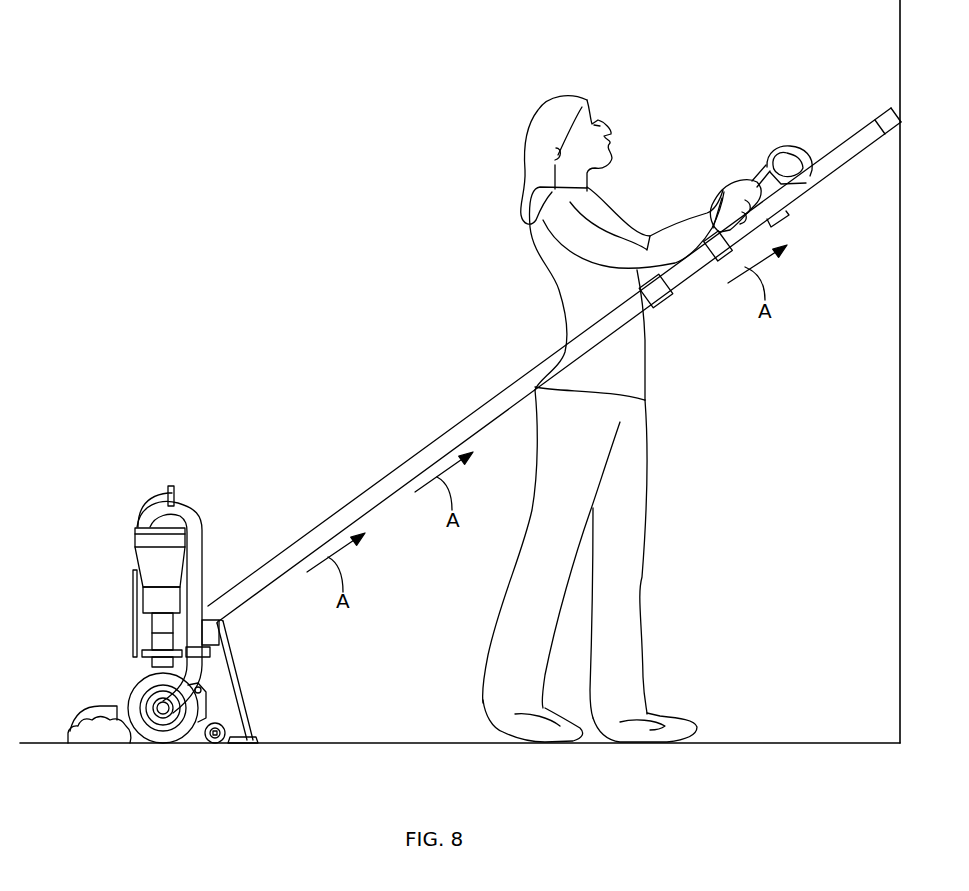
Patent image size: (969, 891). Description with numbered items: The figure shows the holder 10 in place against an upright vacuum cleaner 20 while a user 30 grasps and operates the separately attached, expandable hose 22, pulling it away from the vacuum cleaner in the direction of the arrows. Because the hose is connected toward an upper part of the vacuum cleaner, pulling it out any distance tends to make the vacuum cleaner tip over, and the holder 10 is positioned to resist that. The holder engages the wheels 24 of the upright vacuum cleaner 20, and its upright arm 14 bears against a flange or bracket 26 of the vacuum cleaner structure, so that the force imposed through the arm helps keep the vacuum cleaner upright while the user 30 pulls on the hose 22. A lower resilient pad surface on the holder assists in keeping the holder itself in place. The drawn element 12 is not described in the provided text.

The holder 10 is at (267, 698).
The base foot 12 is at (262, 733).
The upright arm 14 is at (233, 658).
The upright vacuum cleaner 20 is at (212, 520).
The expandable hose 22 is at (363, 493).
The wheels 24 is at (209, 744).
The flange or bracket 26 is at (222, 624).
The user 30 is at (627, 371).